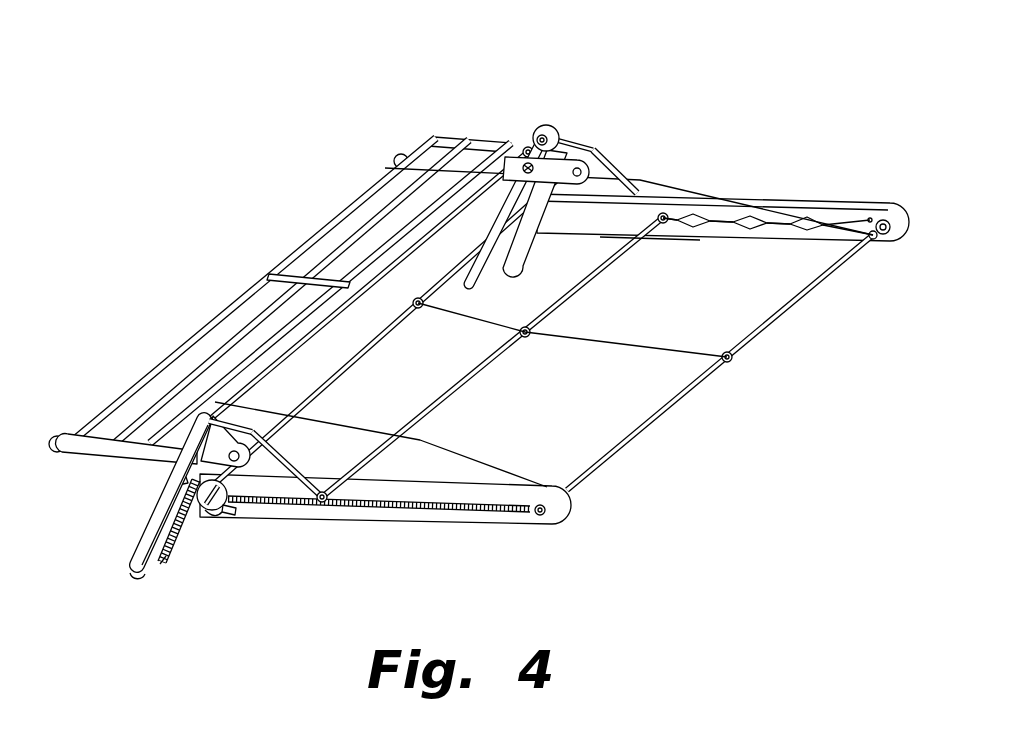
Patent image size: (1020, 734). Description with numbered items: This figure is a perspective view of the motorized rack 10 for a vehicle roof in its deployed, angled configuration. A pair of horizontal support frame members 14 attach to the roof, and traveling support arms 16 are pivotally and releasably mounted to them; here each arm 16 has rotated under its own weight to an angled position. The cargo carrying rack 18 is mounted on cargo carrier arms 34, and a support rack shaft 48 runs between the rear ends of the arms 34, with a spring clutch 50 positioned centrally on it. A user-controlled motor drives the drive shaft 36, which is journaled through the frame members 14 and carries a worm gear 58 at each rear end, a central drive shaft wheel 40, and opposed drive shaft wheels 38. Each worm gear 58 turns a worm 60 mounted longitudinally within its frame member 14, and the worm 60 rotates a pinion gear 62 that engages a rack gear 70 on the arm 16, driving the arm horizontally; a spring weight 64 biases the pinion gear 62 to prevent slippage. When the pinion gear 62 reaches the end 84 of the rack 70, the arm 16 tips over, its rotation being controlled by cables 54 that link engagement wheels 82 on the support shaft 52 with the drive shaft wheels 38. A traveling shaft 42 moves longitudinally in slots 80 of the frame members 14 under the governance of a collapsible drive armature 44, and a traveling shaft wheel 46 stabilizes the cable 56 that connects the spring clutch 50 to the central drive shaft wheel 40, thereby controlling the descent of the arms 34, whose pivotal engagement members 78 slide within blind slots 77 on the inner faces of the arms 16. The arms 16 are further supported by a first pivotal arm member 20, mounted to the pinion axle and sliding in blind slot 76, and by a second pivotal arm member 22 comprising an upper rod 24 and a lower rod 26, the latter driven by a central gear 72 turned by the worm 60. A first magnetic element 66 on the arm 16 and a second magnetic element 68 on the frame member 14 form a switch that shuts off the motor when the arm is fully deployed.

The motorized rack 10 is at (865, 116).
The horizontal support frame member 14 is at (800, 197).
The traveling support arm 16 is at (556, 130).
The cargo carrying rack 18 is at (140, 370).
The first pivotal arm member 20 is at (197, 462).
The second pivotal arm member 22 is at (620, 137).
The upper rod 24 is at (225, 416).
The lower rod 26 is at (333, 470).
The cargo carrier arm 34 is at (400, 157).
The drive shaft 36 is at (800, 300).
The drive shaft wheel 38 is at (886, 234).
The central drive shaft wheel 40 is at (734, 362).
The traveling shaft 42 is at (440, 400).
The collapsible drive armature 44 is at (715, 220).
The traveling shaft wheel 46 is at (529, 338).
The support rack shaft 48 is at (547, 227).
The spring clutch 50 is at (421, 309).
The support shaft 52 is at (487, 157).
The cable 54 is at (640, 180).
The cable 56 is at (672, 350).
The worm gear 58 is at (545, 515).
The worm 60 is at (430, 512).
The pinion gear 62 is at (223, 508).
The spring weight 64 is at (238, 512).
The first magnetic element 66 is at (190, 495).
The second magnetic element 68 is at (208, 513).
The rack gear 70 is at (166, 560).
The central gear 72 is at (326, 505).
The blind slot 76 is at (142, 578).
The blind slot 77 is at (473, 270).
The pivotal engagement member 78 is at (580, 143).
The slot 80 is at (612, 248).
The engagement wheel 82 is at (538, 135).
The rack end 84 is at (178, 482).